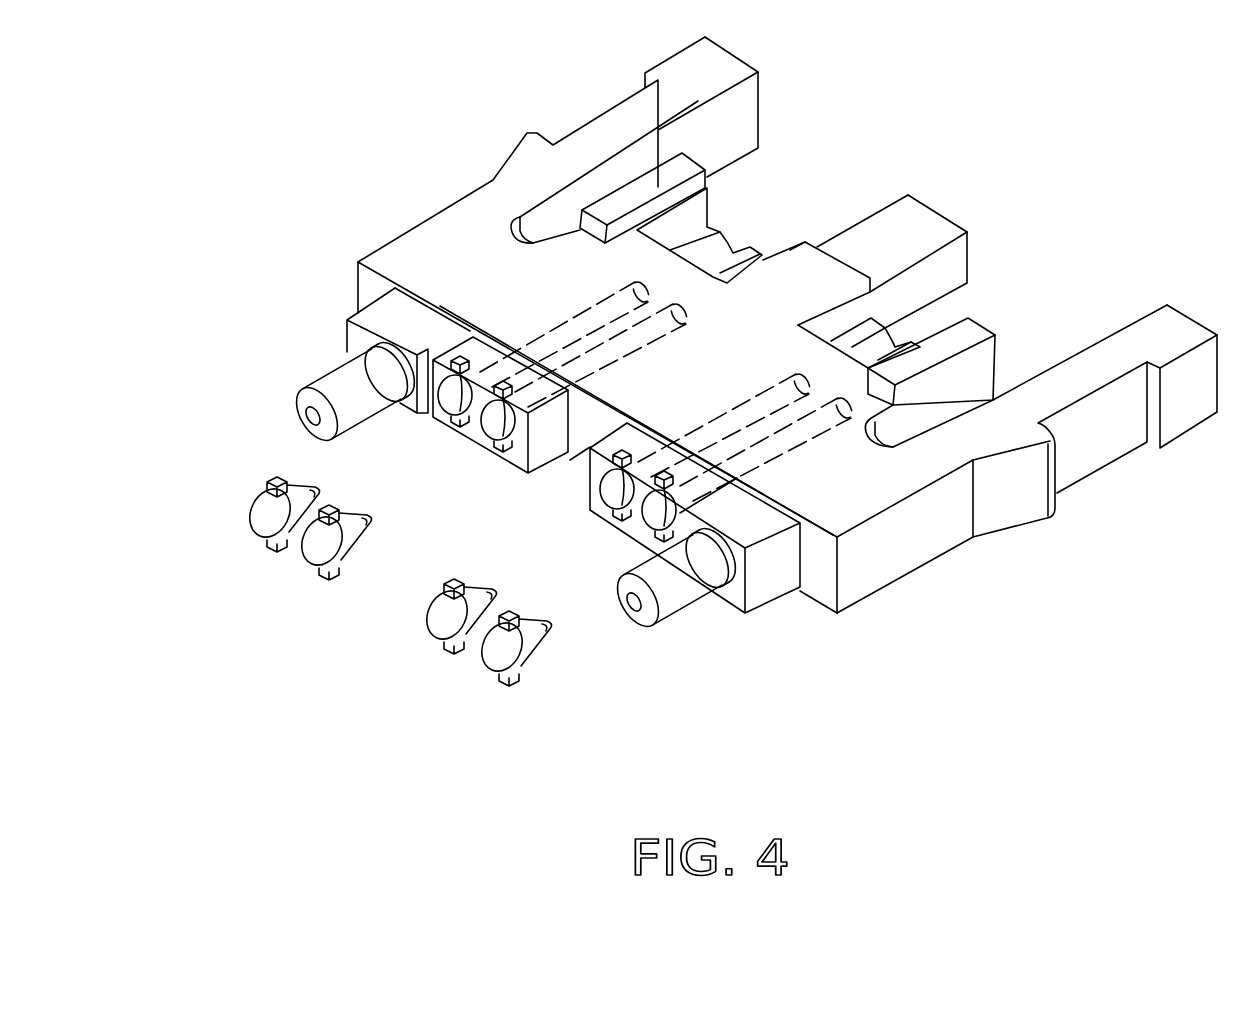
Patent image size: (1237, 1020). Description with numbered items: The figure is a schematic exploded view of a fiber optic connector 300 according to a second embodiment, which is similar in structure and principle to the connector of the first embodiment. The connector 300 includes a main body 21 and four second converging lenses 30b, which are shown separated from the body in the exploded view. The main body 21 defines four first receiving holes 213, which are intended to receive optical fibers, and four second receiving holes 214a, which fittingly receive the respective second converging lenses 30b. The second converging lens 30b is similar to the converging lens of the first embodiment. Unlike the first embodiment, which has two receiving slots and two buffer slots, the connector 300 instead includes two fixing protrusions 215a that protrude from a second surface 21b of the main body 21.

The fiber optic connector 300 is at (423, 100).
The main body 21 is at (437, 245).
The second surface 21b is at (348, 332).
The fixing protrusion 215a is at (330, 386).
The second receiving hole 214a is at (455, 400).
The first receiving hole 213 is at (843, 418).
The second converging lens 30b is at (530, 642).